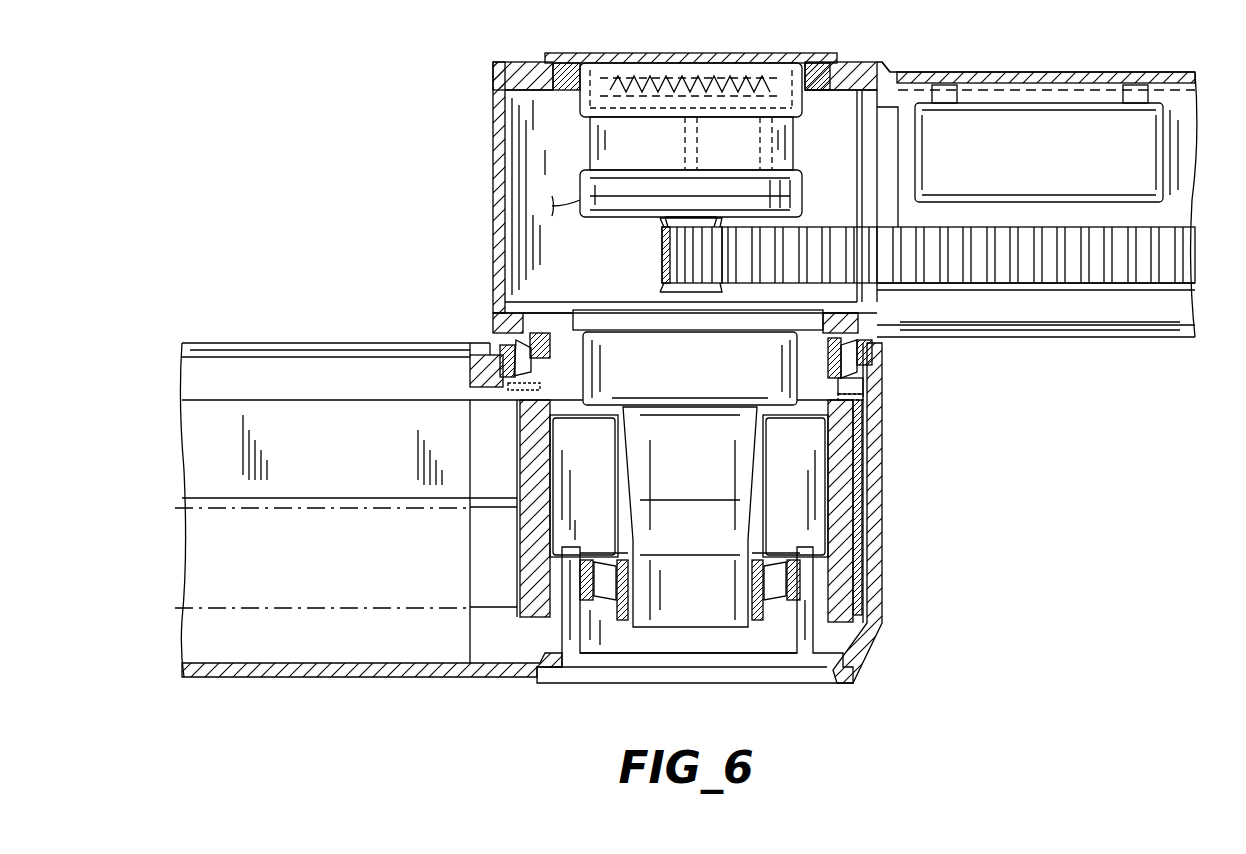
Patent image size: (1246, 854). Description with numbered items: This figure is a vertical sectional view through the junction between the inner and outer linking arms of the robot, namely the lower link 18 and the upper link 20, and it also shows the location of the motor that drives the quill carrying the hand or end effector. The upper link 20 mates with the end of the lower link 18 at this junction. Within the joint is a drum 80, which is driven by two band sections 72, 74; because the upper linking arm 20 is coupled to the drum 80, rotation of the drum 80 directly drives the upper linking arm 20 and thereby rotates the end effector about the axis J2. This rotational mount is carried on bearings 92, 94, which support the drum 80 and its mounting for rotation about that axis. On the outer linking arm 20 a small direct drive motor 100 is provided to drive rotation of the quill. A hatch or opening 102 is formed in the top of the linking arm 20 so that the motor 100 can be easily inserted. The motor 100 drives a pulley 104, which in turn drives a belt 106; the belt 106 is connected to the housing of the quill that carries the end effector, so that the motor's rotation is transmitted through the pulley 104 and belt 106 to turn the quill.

The lower link 18 is at (460, 678).
The upper link 20 is at (990, 72).
The band section 72 is at (395, 445).
The band section 74 is at (857, 553).
The drum 80 is at (865, 655).
The bearing 92 is at (730, 588).
The bearing 94 is at (822, 356).
The direct drive motor 100 is at (585, 140).
The hatch or opening 102 is at (718, 53).
The pulley 104 is at (662, 270).
The belt 106 is at (1013, 275).